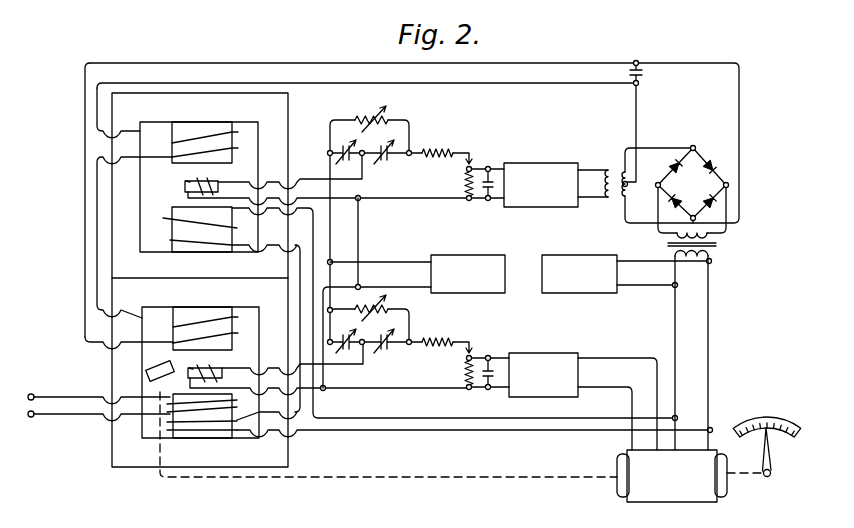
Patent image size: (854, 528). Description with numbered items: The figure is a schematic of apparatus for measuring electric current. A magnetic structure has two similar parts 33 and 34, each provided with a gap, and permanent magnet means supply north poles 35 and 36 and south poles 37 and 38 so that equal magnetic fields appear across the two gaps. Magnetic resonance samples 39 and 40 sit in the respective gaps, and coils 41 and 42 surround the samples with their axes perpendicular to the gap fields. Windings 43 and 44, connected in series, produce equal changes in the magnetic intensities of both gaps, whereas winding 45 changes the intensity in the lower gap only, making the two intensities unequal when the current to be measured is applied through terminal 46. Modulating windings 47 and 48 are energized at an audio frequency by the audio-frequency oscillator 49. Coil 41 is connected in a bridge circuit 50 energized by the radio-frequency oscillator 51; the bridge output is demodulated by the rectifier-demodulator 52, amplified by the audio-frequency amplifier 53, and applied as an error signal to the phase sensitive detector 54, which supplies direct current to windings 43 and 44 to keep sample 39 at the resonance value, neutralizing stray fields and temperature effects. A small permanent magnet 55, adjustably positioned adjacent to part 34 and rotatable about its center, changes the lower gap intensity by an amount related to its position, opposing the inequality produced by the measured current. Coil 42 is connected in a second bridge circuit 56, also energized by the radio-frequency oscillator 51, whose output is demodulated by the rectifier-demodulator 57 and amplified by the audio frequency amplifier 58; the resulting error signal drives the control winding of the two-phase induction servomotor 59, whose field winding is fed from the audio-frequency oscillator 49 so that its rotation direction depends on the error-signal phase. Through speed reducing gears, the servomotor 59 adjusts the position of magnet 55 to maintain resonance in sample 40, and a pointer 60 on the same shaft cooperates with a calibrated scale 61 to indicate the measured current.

The magnetic structure part 33 is at (120, 204).
The magnetic structure part 34 is at (123, 368).
The north pole 35 is at (236, 158).
The north pole 36 is at (233, 344).
The south pole 37 is at (181, 207).
The south pole 38 is at (183, 397).
The magnetic resonance sample 39 is at (221, 187).
The magnetic resonance sample 40 is at (222, 372).
The coil 41 is at (187, 181).
The coil 42 is at (194, 368).
The winding 43 is at (172, 143).
The winding 44 is at (173, 327).
The winding 45 is at (237, 407).
The terminal 46 is at (37, 418).
The modulating winding 47 is at (171, 239).
The modulating winding 48 is at (208, 433).
The audio-frequency oscillator 49 is at (573, 254).
The bridge circuit 50 is at (400, 141).
The radio-frequency oscillator 51 is at (461, 254).
The rectifier-demodulator 52 is at (490, 160).
The audio-frequency amplifier 53 is at (538, 162).
The phase sensitive detector 54 is at (692, 185).
The small permanent magnet 55 is at (155, 364).
The bridge circuit 56 is at (400, 330).
The rectifier-demodulator 57 is at (487, 361).
The audio frequency amplifier 58 is at (541, 352).
The two-phase induction servomotor 59 is at (705, 485).
The pointer 60 is at (771, 458).
The calibrated scale 61 is at (770, 416).